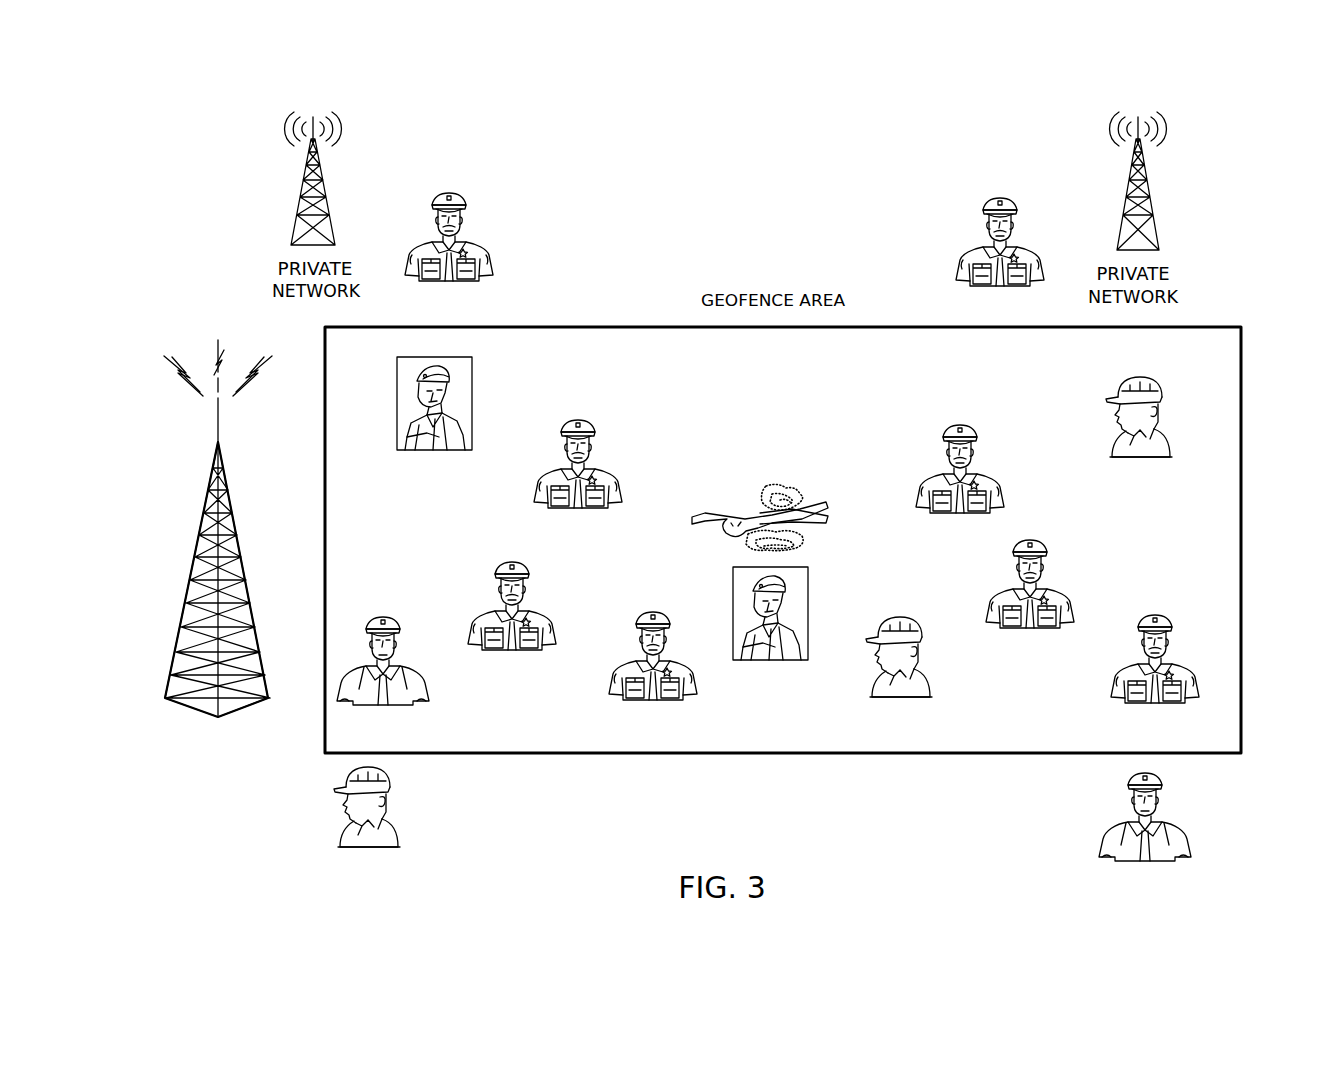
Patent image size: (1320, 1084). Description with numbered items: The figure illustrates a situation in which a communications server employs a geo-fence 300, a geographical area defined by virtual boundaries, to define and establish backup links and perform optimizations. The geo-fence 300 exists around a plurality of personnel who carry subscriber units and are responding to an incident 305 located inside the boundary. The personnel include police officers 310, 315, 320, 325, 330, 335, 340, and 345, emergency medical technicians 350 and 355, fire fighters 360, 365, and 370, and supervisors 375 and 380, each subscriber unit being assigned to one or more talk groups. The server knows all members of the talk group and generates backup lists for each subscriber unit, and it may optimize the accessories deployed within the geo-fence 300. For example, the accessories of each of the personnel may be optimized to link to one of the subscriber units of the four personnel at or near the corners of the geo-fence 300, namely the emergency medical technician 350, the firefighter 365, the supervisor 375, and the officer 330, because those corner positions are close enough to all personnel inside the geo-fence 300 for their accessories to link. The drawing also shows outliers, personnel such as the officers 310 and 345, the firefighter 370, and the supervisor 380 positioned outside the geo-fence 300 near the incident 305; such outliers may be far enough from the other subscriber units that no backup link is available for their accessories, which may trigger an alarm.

The geo-fence 300 is at (325, 541).
The incident 305 is at (753, 516).
The police officer 310 is at (468, 232).
The police officer 315 is at (605, 462).
The police officer 320 is at (538, 607).
The police officer 325 is at (677, 660).
The police officer 330 is at (1180, 661).
The police officer 335 is at (1056, 585).
The police officer 340 is at (985, 468).
The police officer 345 is at (1025, 243).
The emergency medical technician 350 is at (472, 403).
The emergency medical technician 355 is at (807, 615).
The fire fighter 360 is at (928, 673).
The fire fighter 365 is at (1168, 437).
The fire fighter 370 is at (397, 818).
The supervisor 375 is at (406, 664).
The supervisor 380 is at (1168, 817).